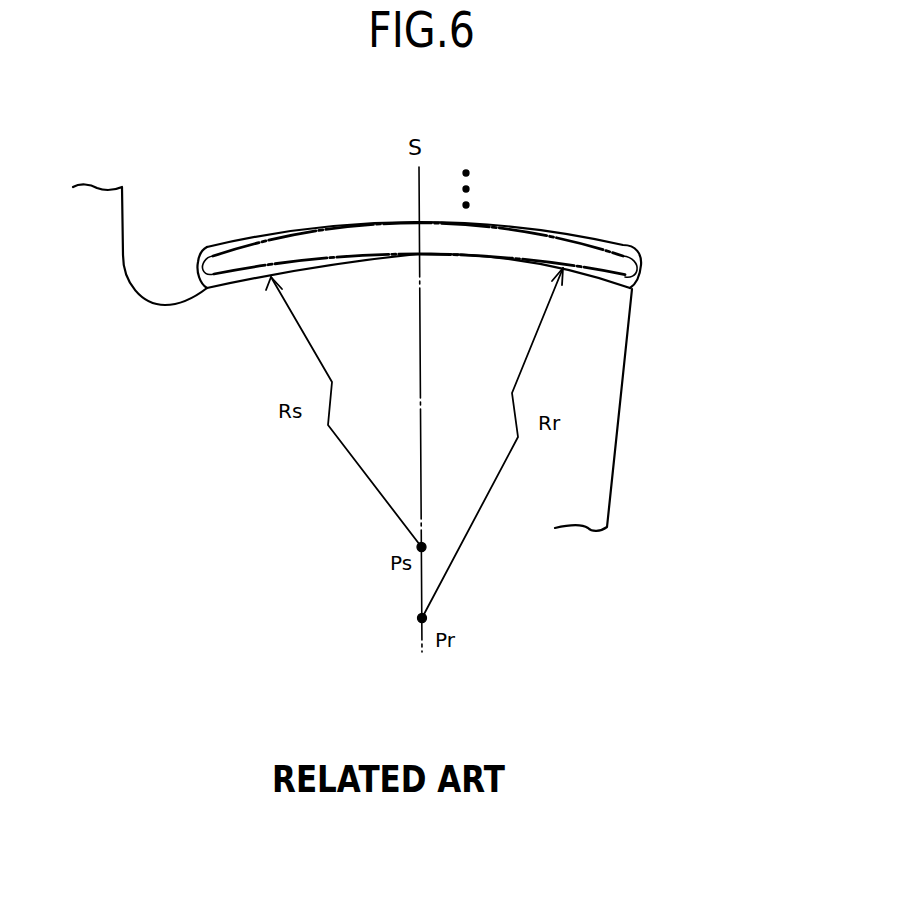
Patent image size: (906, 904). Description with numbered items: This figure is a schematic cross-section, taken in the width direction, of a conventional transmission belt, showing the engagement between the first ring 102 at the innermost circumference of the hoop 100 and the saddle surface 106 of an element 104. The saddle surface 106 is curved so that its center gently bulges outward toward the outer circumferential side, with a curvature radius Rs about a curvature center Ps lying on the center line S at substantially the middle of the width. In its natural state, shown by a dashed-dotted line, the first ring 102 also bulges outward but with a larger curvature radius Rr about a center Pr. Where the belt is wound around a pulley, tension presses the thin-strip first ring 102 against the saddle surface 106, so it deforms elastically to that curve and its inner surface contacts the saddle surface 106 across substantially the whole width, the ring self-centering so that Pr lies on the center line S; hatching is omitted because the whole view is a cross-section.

The hoop 100 is at (384, 320).
The first ring 102 is at (345, 238).
The element 104 is at (603, 402).
The saddle surface 106 is at (593, 278).